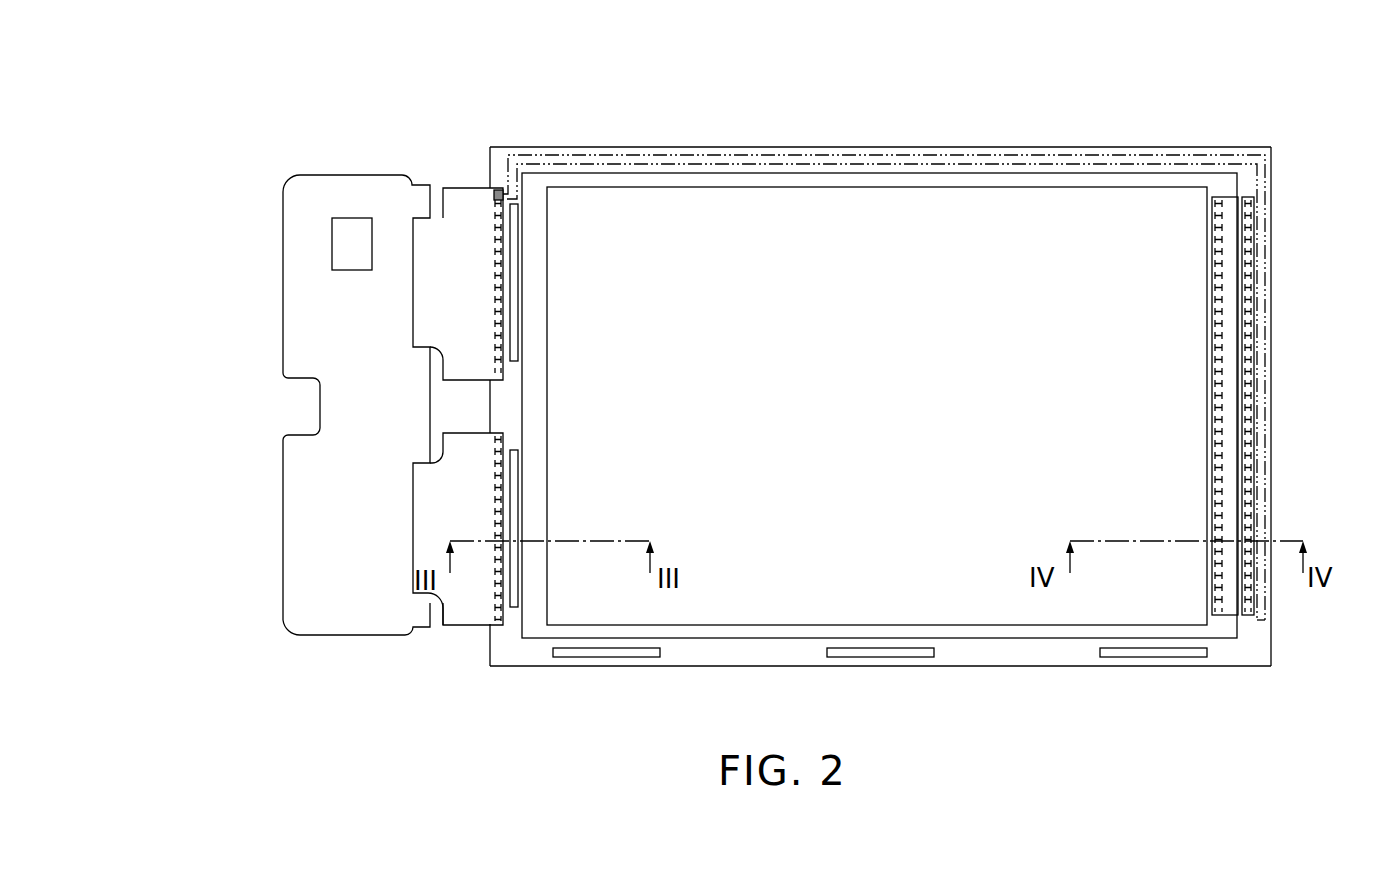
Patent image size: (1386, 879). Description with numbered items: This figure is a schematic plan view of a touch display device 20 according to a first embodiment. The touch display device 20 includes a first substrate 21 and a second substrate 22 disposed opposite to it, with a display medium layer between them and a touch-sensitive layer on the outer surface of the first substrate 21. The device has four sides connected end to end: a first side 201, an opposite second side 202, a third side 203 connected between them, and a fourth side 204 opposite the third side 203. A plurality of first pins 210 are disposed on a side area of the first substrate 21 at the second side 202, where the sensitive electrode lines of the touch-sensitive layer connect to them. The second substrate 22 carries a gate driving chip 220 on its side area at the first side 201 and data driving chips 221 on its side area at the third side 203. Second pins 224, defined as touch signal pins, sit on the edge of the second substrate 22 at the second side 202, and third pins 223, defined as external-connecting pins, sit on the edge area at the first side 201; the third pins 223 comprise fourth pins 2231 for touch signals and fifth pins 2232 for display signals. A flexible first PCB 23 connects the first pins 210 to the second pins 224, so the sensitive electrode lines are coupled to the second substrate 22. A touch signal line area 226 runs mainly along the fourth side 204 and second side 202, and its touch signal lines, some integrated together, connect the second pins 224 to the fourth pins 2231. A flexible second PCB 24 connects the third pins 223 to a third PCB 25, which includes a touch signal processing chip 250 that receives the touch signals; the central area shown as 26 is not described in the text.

The touch display device 20 is at (739, 72).
The first side 201 is at (268, 403).
The second side 202 is at (1287, 423).
The third side 203 is at (672, 685).
The fourth side 204 is at (703, 133).
The first substrate 21 is at (535, 612).
The first pins 210 is at (1217, 197).
The second substrate 22 is at (773, 650).
The gate driving chip 220 is at (515, 608).
The data driving chips 221 is at (1133, 650).
The third pins 223 is at (537, 60).
The fourth pins 2231 is at (501, 193).
The fifth pins 2232 is at (497, 267).
The second pins 224 is at (1250, 298).
The touch signal line area 226 is at (570, 162).
The first PCB 23 is at (1233, 270).
The second PCB 24 is at (455, 313).
The third PCB 25 is at (305, 301).
The touch signal processing chip 250 is at (353, 233).
The display area 26 is at (945, 237).